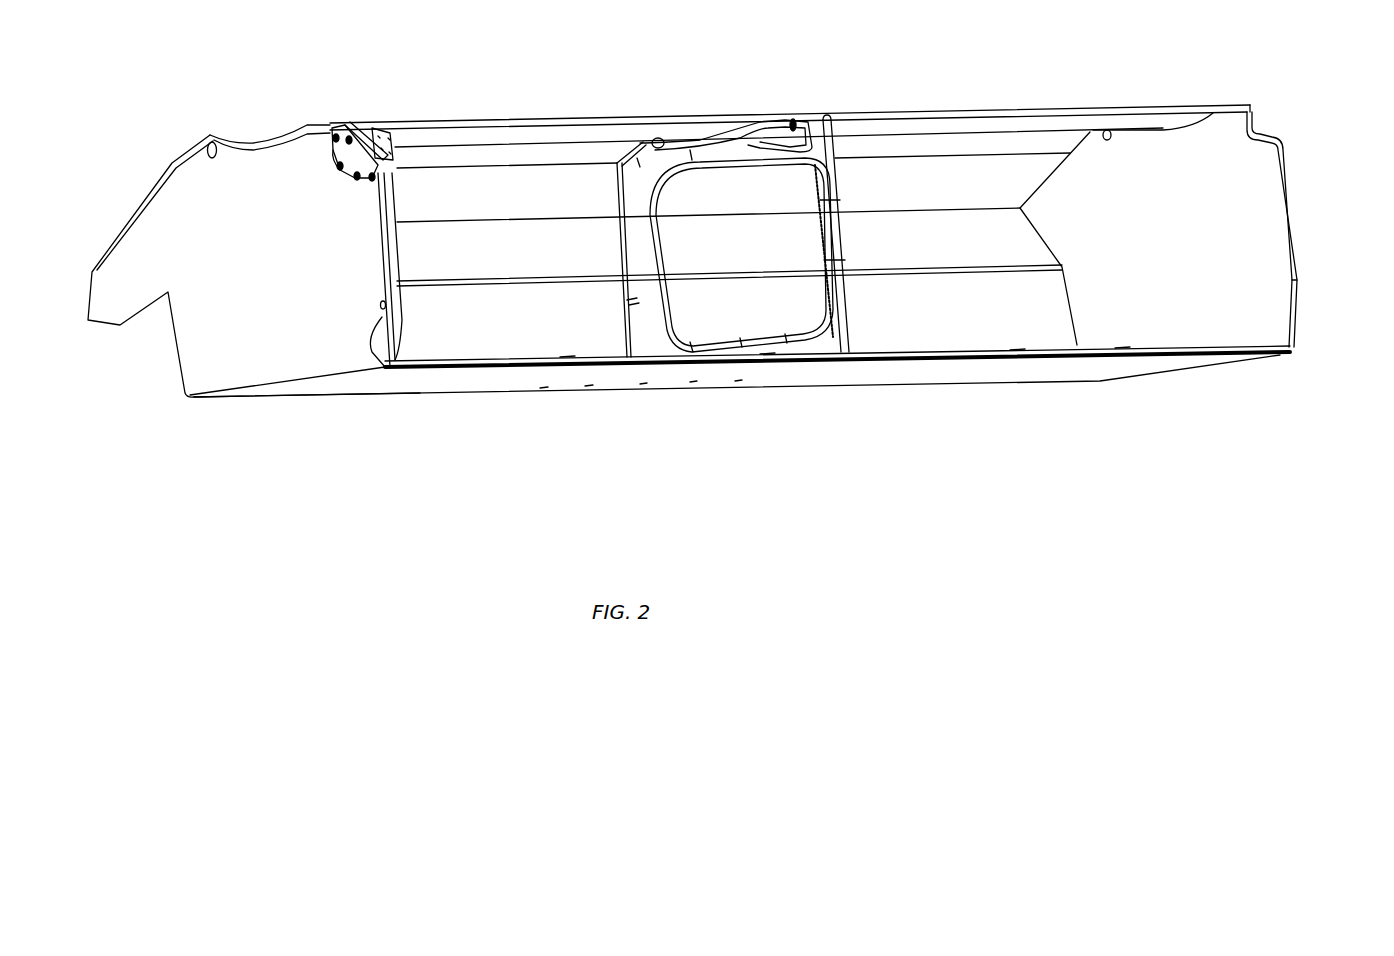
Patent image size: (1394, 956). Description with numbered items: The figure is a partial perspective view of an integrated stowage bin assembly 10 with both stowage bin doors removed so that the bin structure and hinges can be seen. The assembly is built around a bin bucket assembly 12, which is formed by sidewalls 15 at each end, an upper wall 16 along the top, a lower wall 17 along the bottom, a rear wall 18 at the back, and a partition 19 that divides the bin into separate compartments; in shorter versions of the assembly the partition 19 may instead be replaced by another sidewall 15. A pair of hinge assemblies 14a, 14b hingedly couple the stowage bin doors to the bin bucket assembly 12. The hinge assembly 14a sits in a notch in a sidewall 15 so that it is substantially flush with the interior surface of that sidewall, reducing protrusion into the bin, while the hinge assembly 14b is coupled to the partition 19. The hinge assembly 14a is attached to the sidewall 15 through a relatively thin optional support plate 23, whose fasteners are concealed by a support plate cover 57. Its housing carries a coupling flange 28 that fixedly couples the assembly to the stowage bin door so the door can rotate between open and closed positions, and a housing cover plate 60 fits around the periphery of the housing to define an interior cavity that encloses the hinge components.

The integrated stowage bin assembly 10 is at (735, 242).
The bin bucket assembly 12 is at (572, 333).
The hinge assembly 14a is at (327, 157).
The hinge assembly 14b is at (792, 117).
The sidewall 15 is at (269, 284).
The upper wall 16 is at (1023, 118).
The lower wall 17 is at (953, 370).
The rear wall 18 is at (927, 178).
The partition 19 is at (833, 350).
The support plate 23 is at (332, 132).
The coupling flange 28 is at (390, 147).
The support plate cover 57 is at (345, 128).
The housing cover plate 60 is at (367, 140).